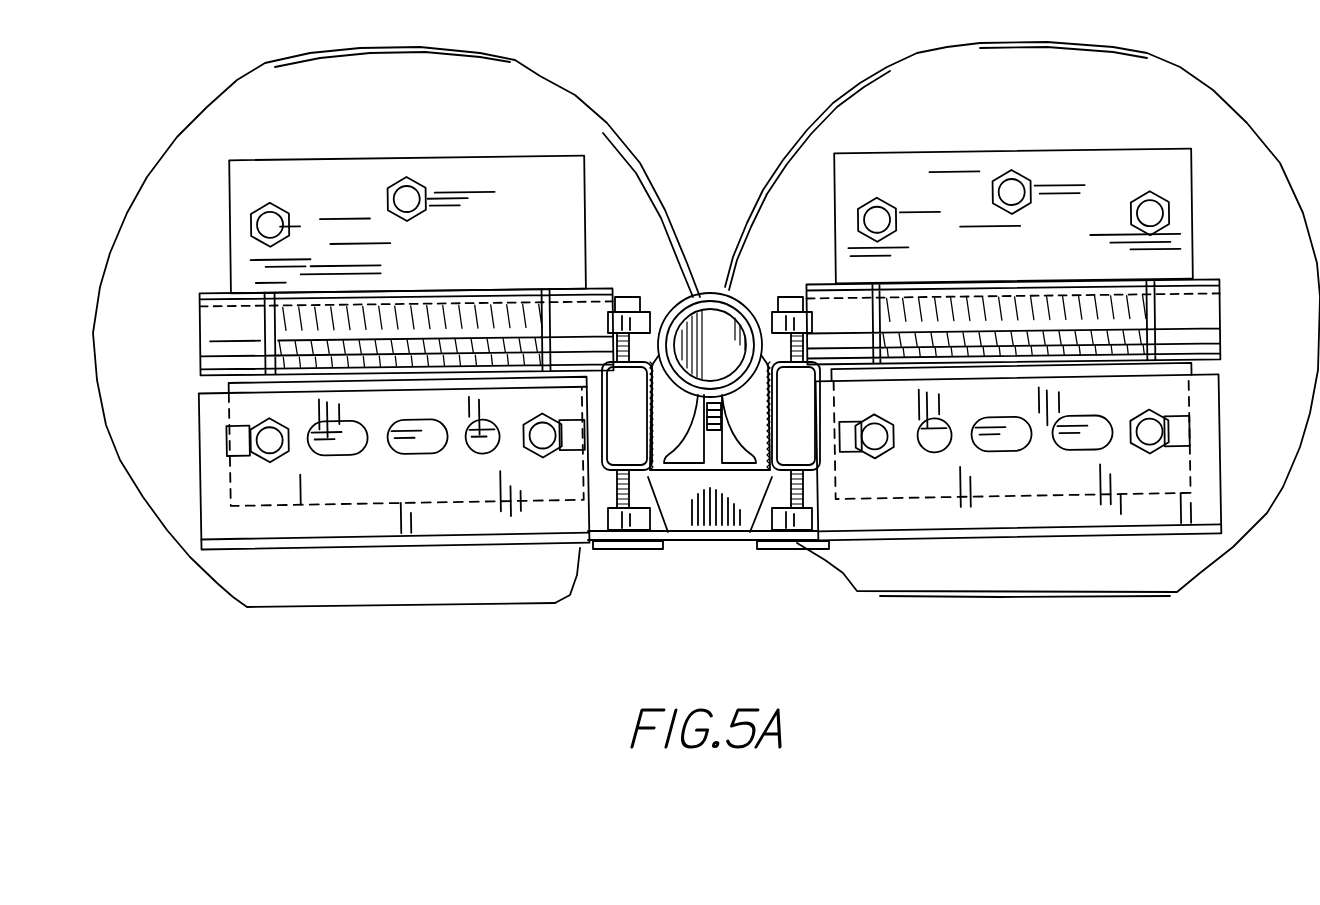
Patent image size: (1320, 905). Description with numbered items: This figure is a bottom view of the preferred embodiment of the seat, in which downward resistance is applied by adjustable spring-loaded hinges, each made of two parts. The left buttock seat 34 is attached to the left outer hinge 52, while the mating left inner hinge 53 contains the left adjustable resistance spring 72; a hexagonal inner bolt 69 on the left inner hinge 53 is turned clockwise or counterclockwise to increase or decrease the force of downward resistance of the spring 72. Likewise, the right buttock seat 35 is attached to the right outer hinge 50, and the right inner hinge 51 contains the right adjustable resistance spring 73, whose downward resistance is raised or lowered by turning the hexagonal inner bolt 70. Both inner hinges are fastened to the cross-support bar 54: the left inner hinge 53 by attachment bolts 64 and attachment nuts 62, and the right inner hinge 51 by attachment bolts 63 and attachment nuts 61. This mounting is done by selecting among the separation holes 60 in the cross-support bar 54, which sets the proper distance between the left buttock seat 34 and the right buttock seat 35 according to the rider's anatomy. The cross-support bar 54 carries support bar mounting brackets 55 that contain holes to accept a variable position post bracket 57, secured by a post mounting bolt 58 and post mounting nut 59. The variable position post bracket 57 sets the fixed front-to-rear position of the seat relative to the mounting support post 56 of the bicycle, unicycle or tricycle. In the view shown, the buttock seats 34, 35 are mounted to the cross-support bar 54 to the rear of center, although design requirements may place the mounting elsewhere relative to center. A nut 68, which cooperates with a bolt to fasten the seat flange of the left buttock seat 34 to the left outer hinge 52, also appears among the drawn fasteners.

The left buttock seat 34 is at (840, 90).
The right buttock seat 35 is at (590, 102).
The right outer hinge 50 is at (230, 203).
The right inner hinge 51 is at (452, 490).
The left outer hinge 52 is at (1192, 205).
The left inner hinge 53 is at (1185, 475).
The cross-support bar 54 is at (248, 548).
The support bar mounting brackets 55 is at (773, 513).
The mounting support post 56 is at (733, 307).
The variable position post bracket 57 is at (710, 292).
The post mounting bolt 58 is at (617, 550).
The post mounting nut 59 is at (822, 436).
The separation holes 60 is at (227, 442).
The attachment nuts 61 is at (270, 455).
The attachment nuts 62 is at (877, 440).
The attachment bolts 63 is at (265, 447).
The attachment bolts 64 is at (956, 453).
The nut 68 is at (1150, 190).
The hexagonal inner bolt 69 is at (1220, 320).
The hexagonal inner bolt 70 is at (200, 325).
The left adjustable resistance spring 72 is at (1003, 313).
The right adjustable resistance spring 73 is at (410, 330).